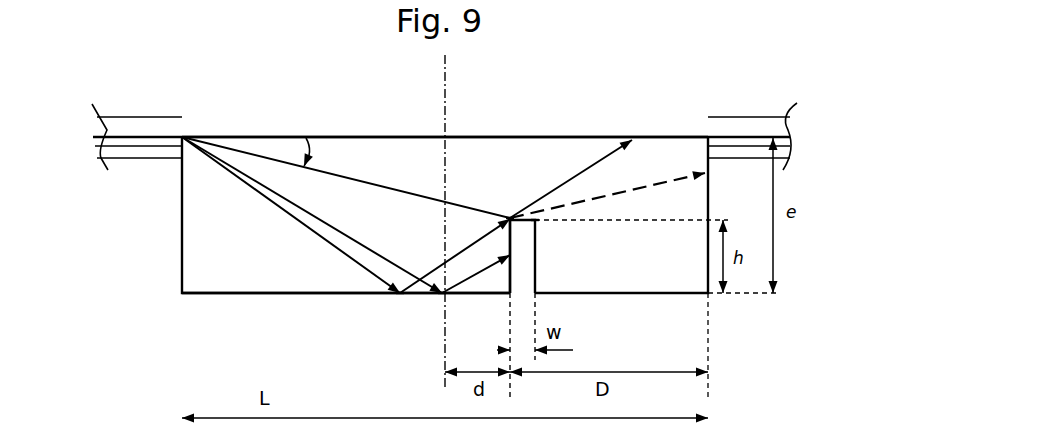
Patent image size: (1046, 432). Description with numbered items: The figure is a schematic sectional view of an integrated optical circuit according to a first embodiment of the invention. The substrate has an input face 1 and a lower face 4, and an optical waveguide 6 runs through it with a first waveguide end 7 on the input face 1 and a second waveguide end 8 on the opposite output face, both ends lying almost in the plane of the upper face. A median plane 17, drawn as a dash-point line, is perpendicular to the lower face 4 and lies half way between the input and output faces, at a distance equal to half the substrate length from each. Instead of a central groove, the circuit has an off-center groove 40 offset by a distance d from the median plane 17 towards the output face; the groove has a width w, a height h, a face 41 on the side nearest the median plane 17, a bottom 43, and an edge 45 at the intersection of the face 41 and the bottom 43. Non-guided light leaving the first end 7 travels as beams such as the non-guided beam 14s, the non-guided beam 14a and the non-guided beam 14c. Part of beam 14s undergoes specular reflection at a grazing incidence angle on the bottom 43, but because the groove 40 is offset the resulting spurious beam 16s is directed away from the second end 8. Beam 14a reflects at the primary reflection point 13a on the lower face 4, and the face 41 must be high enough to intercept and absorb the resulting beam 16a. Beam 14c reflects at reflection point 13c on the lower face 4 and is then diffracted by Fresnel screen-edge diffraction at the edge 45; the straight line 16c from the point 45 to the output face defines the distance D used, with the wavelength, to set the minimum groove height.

The input face 1 is at (182, 263).
The lower face 4 is at (240, 293).
The optical waveguide 6 is at (252, 137).
The first waveguide end 7 is at (180, 138).
The second waveguide end 8 is at (717, 135).
The primary reflection point 13a is at (440, 294).
The reflection point 13c is at (400, 293).
The non-guided optical beam 14a is at (392, 262).
The non-guided light beam 14c is at (310, 230).
The non-guided light beam 14s is at (398, 190).
The primary reflection beam 16a is at (453, 260).
The straight line 16c is at (570, 178).
The spurious specular reflection beam 16s is at (668, 182).
The median plane 17 is at (445, 103).
The off-center groove 40 is at (535, 285).
The face of the off-center groove 41 is at (510, 277).
The bottom of the off-center groove 43 is at (542, 222).
The edge of the off-center groove 45 is at (510, 217).